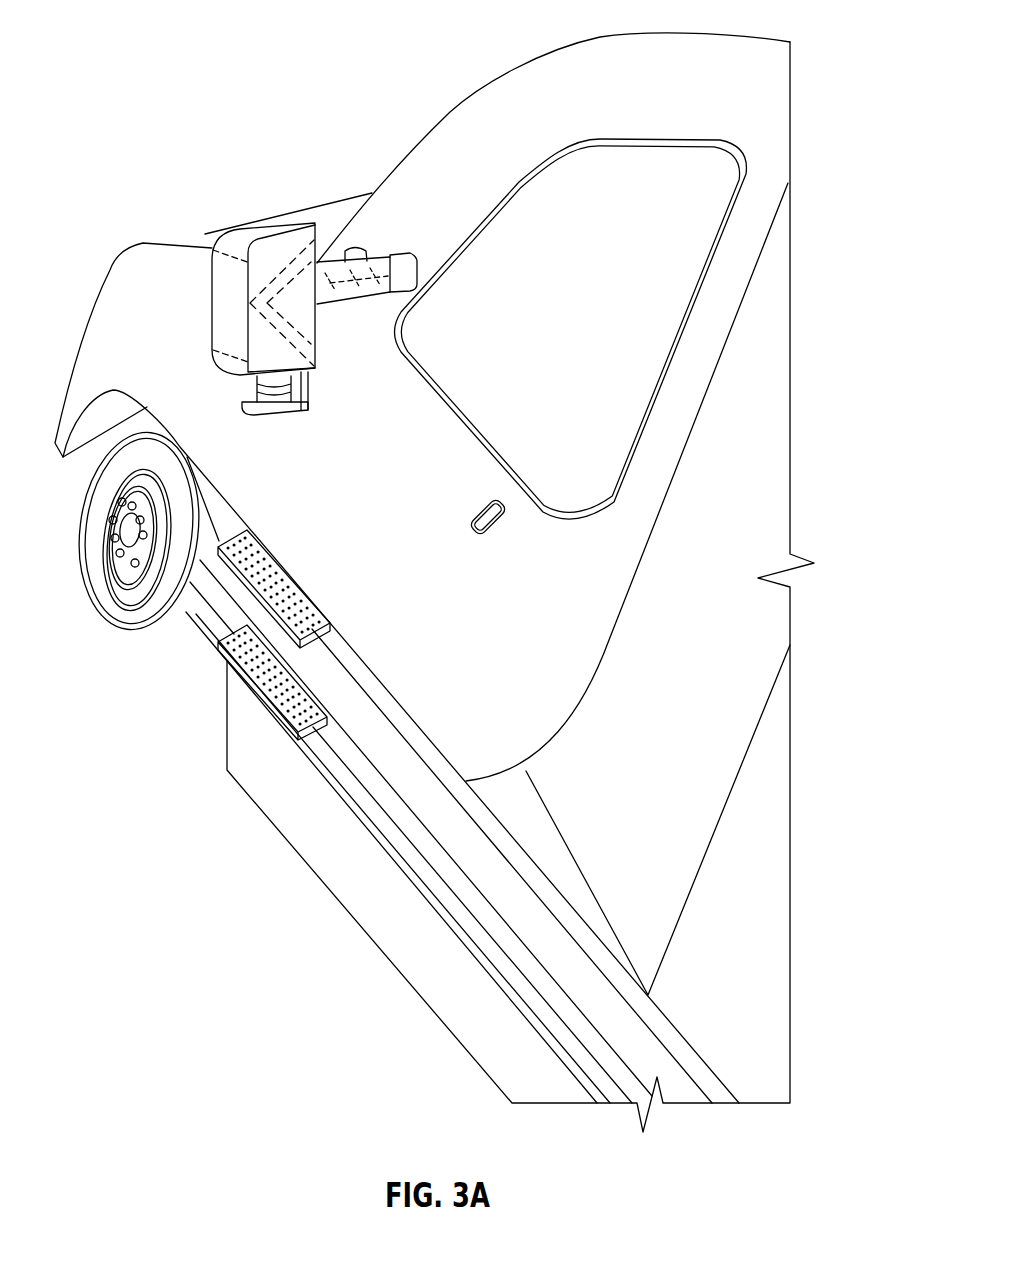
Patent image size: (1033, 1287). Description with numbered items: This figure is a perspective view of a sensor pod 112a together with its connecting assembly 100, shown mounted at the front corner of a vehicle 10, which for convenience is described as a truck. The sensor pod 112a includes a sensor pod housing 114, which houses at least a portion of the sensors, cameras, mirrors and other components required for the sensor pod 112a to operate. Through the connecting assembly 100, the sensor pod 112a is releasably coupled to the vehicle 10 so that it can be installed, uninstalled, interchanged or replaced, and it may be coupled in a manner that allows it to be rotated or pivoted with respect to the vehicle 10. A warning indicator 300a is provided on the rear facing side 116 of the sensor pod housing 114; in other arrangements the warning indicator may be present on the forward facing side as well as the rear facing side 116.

The vehicle 10 is at (455, 84).
The connecting assembly 100 is at (340, 267).
The sensor pod 112a is at (208, 235).
The sensor pod housing 114 is at (280, 247).
The rear facing side 116 is at (303, 357).
The warning indicator 300a is at (270, 343).